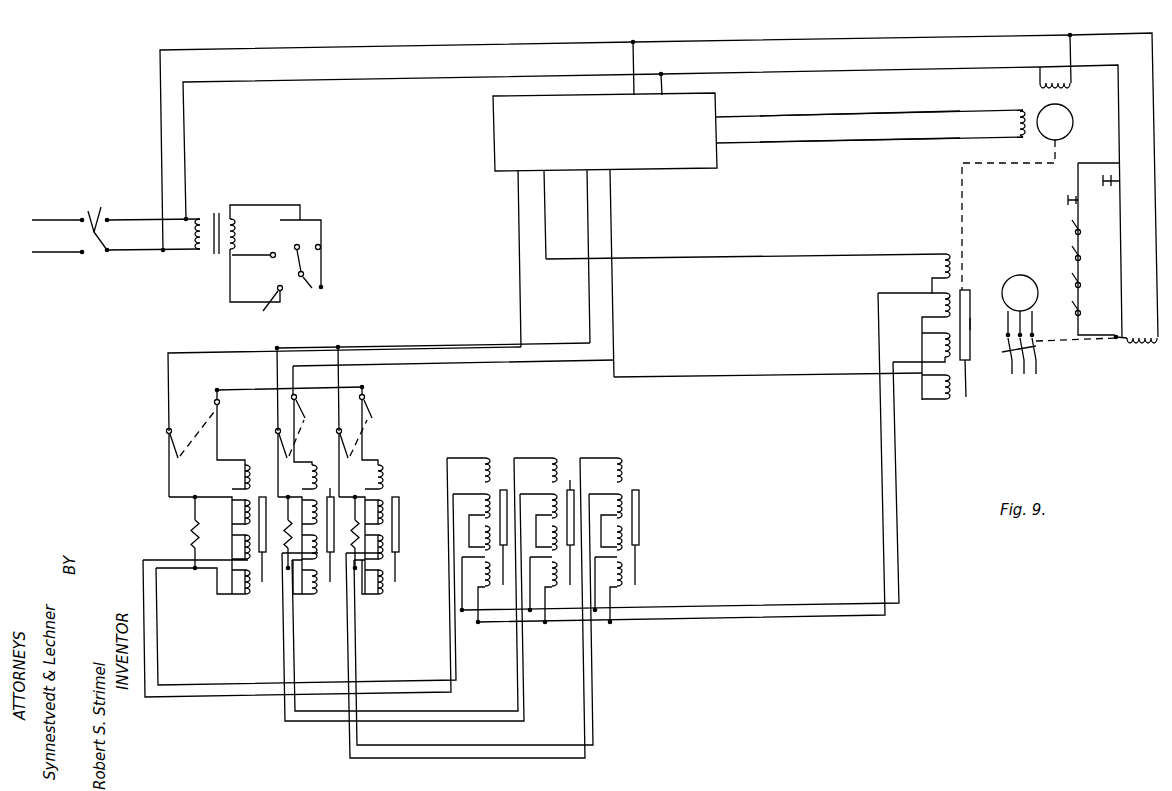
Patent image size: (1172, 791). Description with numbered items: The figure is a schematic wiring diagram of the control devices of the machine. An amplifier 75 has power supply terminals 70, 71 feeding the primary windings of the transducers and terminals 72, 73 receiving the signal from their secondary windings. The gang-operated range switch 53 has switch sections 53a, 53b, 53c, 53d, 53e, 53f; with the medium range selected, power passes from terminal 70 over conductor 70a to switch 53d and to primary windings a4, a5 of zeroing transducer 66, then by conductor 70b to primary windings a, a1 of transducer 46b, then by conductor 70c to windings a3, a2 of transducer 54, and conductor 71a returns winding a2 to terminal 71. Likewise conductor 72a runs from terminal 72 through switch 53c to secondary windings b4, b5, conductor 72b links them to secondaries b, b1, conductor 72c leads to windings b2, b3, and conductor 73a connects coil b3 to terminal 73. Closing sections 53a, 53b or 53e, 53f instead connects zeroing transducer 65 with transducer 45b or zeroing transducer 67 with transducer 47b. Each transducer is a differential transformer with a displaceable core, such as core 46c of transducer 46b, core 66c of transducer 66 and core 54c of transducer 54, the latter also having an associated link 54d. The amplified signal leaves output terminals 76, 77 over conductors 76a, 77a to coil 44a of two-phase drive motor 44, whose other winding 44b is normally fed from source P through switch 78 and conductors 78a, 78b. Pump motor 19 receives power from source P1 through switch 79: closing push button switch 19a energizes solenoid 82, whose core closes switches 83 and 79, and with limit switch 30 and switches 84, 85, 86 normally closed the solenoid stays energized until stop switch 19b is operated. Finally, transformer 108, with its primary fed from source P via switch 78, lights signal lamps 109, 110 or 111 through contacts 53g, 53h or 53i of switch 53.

The conductor 78a is at (393, 47).
The conductor 78b is at (402, 79).
The switch 78 is at (108, 212).
The power source P is at (49, 236).
The transformer 108 is at (223, 216).
The light 109 is at (271, 253).
The light 110 is at (300, 246).
The light 111 is at (321, 247).
The contact 53g is at (257, 309).
The contact 53h is at (300, 290).
The contact 53i is at (323, 288).
The amplifier 75 is at (605, 132).
The terminal 70 is at (514, 249).
The terminal 71 is at (546, 205).
The terminal 72 is at (585, 247).
The terminal 73 is at (611, 264).
The output terminal 76 is at (719, 116).
The output terminal 77 is at (732, 143).
The conductor 76a is at (822, 113).
The conductor 77a is at (806, 142).
The coil 44a is at (1018, 112).
The winding 44b is at (1053, 80).
The two phase drive motor 44 is at (1068, 113).
The push button switch 19a is at (1118, 176).
The stop switch 19b is at (1078, 249).
The limit switch 30 is at (1075, 232).
The switch 84 is at (1075, 258).
The switch 85 is at (1075, 285).
The switch 86 is at (1075, 313).
The switch 83 is at (1117, 342).
The solenoid 82 is at (1146, 345).
The pump motor 19 is at (1020, 306).
The switch 79 is at (1032, 350).
The power source P1 is at (1021, 385).
The transducer 54 is at (972, 293).
The movable core 54c is at (980, 312).
The armature link 54d is at (967, 392).
The conductor 71a is at (723, 259).
The primary winding a2 is at (927, 273).
The secondary winding b2 is at (914, 346).
The primary winding a3 is at (921, 347).
The secondary winding b3 is at (936, 387).
The conductor 73a is at (738, 371).
The conductor 70c is at (702, 604).
The conductor 72c is at (709, 618).
The conductor 70a is at (519, 312).
The conductor 72a is at (589, 298).
The switch 53 is at (156, 423).
The switch section 53a is at (155, 463).
The switch section 53b is at (214, 426).
The switch section 53c is at (263, 462).
The switch section 53d is at (312, 426).
The switch section 53e is at (331, 462).
The switch section 53f is at (380, 426).
The zeroing transducer 65 is at (254, 595).
The zeroing transducer 66 is at (316, 595).
The zeroing transducer 67 is at (398, 585).
The primary winding a4 is at (326, 476).
The secondary winding b4 is at (319, 510).
The primary winding a5 is at (317, 550).
The secondary winding b5 is at (319, 592).
The movable core 66c is at (333, 497).
The conductor 70b is at (285, 720).
The conductor 72b is at (294, 660).
The transducer 45b is at (489, 456).
The transducer 46b is at (554, 456).
The transducer 47b is at (620, 456).
The primary winding a is at (548, 470).
The secondary winding b is at (548, 500).
The primary winding a1 is at (543, 537).
The secondary winding b1 is at (556, 584).
The movable core 46c is at (572, 477).